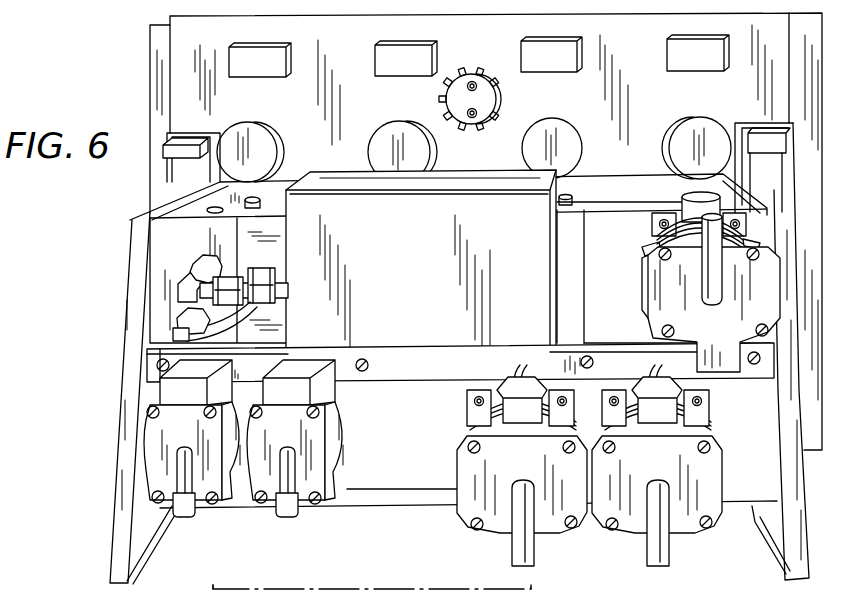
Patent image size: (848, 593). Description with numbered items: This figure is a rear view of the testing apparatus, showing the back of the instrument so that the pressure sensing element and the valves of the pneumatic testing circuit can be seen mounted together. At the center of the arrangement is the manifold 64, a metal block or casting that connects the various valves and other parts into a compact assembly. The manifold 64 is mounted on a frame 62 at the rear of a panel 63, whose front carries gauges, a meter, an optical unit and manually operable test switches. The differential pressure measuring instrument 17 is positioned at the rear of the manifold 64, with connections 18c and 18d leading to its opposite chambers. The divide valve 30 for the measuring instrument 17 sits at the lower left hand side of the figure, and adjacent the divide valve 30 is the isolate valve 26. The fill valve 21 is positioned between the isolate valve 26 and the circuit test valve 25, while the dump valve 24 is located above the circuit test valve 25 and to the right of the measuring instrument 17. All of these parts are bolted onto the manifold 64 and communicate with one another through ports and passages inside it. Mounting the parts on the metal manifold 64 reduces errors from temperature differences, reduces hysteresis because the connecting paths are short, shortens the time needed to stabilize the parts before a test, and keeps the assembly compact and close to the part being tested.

The differential pressure measuring instrument 17 is at (405, 259).
The connection 18c is at (172, 338).
The connection 18d is at (178, 293).
The fill valve 21 is at (497, 526).
The dump valve 24 is at (711, 282).
The circuit test valve 25 is at (682, 526).
The isolate valve 26 is at (317, 481).
The divide valve 30 is at (147, 450).
The frame 62 is at (115, 560).
The panel 63 is at (180, 85).
The manifold 64 is at (157, 252).